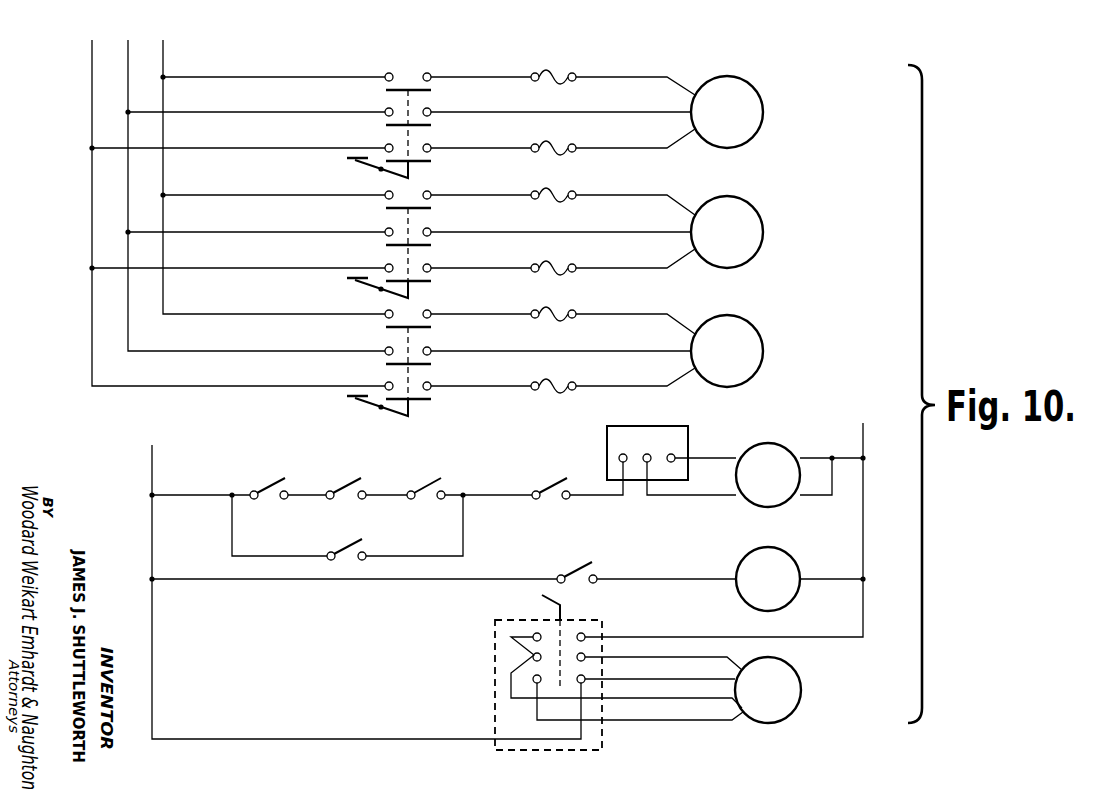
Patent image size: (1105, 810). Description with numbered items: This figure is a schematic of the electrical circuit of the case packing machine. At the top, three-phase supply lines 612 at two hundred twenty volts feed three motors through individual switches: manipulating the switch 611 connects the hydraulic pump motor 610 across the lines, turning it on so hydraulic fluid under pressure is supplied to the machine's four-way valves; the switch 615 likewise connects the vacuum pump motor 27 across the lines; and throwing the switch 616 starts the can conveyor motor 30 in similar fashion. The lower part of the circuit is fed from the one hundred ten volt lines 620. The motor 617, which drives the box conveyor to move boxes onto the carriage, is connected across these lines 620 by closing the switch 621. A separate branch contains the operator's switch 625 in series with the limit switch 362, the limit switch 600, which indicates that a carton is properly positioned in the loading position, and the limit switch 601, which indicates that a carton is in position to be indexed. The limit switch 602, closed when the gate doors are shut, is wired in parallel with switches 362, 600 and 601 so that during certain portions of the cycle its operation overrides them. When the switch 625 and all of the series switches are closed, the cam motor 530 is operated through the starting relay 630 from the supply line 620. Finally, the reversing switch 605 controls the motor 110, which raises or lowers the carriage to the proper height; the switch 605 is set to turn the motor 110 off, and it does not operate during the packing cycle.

The three-phase supply lines 612 is at (92, 62).
The switch 611 is at (420, 70).
The switch 615 is at (423, 186).
The switch 616 is at (425, 305).
The hydraulic pump motor 610 is at (735, 78).
The vacuum pump motor 27 is at (735, 198).
The can conveyor motor 30 is at (735, 317).
The 110 volt lines 620 is at (152, 535).
The limit switch 362 is at (272, 479).
The limit switch 600 is at (346, 489).
The limit switch 601 is at (424, 482).
The limit switch 602 is at (366, 549).
The switch 625 is at (555, 482).
The starting relay 630 is at (696, 434).
The cam motor 530 is at (781, 444).
The switch 621 is at (596, 567).
The motor 617 is at (790, 548).
The reversing switch 605 is at (490, 672).
The motor 110 is at (790, 663).